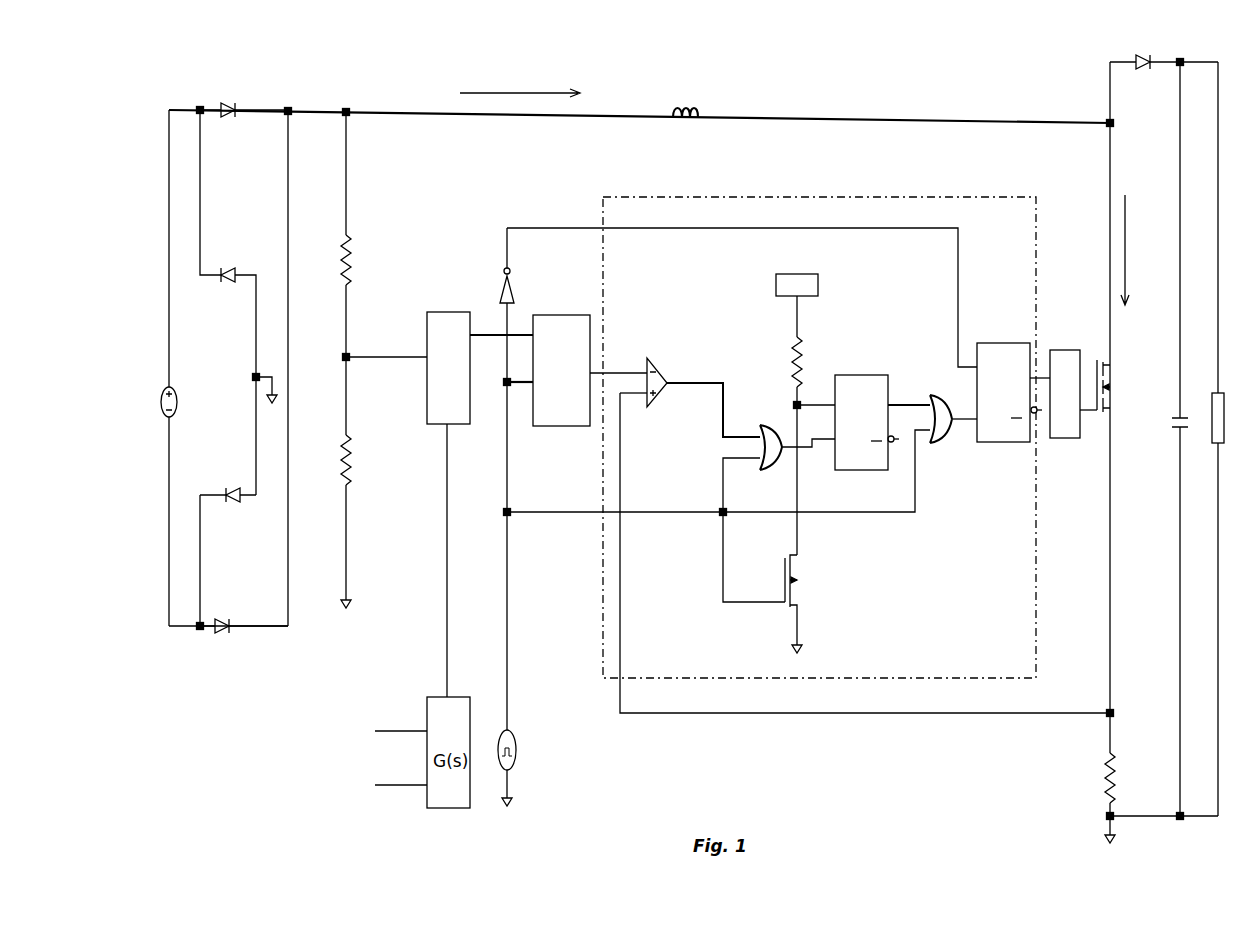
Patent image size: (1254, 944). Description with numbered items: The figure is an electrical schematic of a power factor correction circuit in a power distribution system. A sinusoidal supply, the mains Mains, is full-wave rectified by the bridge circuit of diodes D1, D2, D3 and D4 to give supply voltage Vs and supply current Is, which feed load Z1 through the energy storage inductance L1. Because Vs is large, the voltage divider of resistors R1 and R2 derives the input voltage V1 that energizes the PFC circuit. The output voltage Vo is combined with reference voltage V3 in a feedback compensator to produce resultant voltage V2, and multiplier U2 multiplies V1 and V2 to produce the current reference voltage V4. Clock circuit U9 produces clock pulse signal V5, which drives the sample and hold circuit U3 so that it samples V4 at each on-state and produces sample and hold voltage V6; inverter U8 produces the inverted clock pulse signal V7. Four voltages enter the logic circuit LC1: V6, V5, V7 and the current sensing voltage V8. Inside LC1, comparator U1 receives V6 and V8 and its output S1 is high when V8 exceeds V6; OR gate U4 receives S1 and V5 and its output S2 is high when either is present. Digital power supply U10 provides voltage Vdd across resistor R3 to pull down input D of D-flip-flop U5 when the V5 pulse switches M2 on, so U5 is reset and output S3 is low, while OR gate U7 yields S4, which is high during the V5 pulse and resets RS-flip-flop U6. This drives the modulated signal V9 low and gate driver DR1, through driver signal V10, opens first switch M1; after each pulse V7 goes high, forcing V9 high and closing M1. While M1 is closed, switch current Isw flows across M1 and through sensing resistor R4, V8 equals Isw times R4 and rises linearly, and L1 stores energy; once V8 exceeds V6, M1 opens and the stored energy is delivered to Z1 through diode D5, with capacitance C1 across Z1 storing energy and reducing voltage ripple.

The bridge circuit diode D1 is at (244, 91).
The bridge circuit diode D2 is at (228, 302).
The bridge circuit diode D3 is at (228, 541).
The bridge circuit diode D4 is at (244, 609).
The diode D5 is at (1164, 78).
The mains Mains is at (198, 402).
The supply voltage Vs is at (347, 110).
The voltage divider resistor R1 is at (362, 296).
The voltage divider resistor R2 is at (362, 482).
The resistor R3 is at (810, 446).
The sensing resistor R4 is at (1135, 798).
The input voltage V1 is at (336, 360).
The resultant voltage V2 is at (447, 573).
The reference voltage V3 is at (396, 772).
The current reference voltage V4 is at (485, 333).
The clock pulse signal V5 is at (510, 515).
The sample and hold voltage V6 is at (618, 362).
The inverted clock pulse signal V7 is at (532, 228).
The current sensing voltage V8 is at (808, 713).
The modulated signal V9 is at (1045, 343).
The driver signal V10 is at (1086, 418).
The output voltage Vo is at (797, 381).
The voltage Vdd is at (797, 322).
The supply current Is is at (520, 81).
The switch current Isw is at (1140, 250).
The comparator U1 is at (652, 372).
The multiplier U2 is at (448, 354).
The sample and hold circuit U3 is at (547, 358).
The OR gate U4 is at (795, 436).
The D-flip-flop U5 is at (848, 410).
The RS-flip-flop U6 is at (1013, 379).
The OR gate U7 is at (953, 435).
The inverter U8 is at (518, 305).
The clock circuit U9 is at (537, 659).
The digital power supply U10 is at (797, 293).
The comparator output S1 is at (698, 383).
The OR gate output S2 is at (812, 450).
The D-flip-flop output S3 is at (904, 408).
The reset signal S4 is at (968, 428).
The inductance L1 is at (685, 95).
The logic circuit LC1 is at (819, 423).
The capacitance C1 is at (1168, 439).
The load Z1 is at (1231, 439).
The first switch M1 is at (1119, 386).
The switch M2 is at (809, 604).
The gate driver DR1 is at (1073, 418).